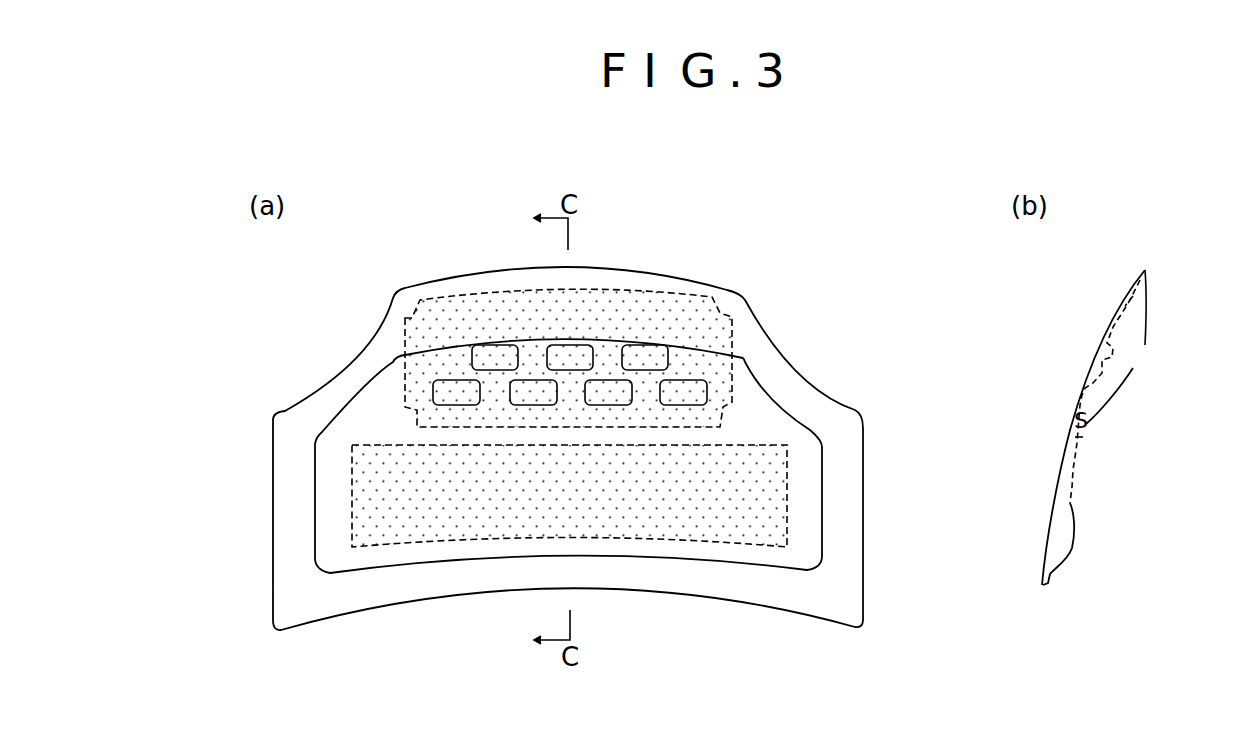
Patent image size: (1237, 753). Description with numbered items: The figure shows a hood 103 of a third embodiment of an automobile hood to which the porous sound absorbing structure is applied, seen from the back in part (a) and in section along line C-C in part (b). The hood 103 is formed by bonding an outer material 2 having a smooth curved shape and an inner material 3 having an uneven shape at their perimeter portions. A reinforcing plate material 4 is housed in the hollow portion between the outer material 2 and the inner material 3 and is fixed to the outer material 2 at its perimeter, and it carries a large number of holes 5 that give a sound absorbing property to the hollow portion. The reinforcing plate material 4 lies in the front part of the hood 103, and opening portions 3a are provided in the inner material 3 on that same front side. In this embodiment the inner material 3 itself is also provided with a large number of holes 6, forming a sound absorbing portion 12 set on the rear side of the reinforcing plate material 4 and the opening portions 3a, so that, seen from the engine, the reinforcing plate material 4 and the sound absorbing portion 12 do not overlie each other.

The hood 103 is at (823, 241).
The outer material 2 is at (815, 389).
The inner material 3 is at (748, 586).
The opening portions 3a is at (433, 378).
The reinforcing plate material 4 is at (740, 313).
The holes 5 is at (673, 318).
The holes 6 is at (758, 462).
The sound absorbing portion 12 is at (787, 493).